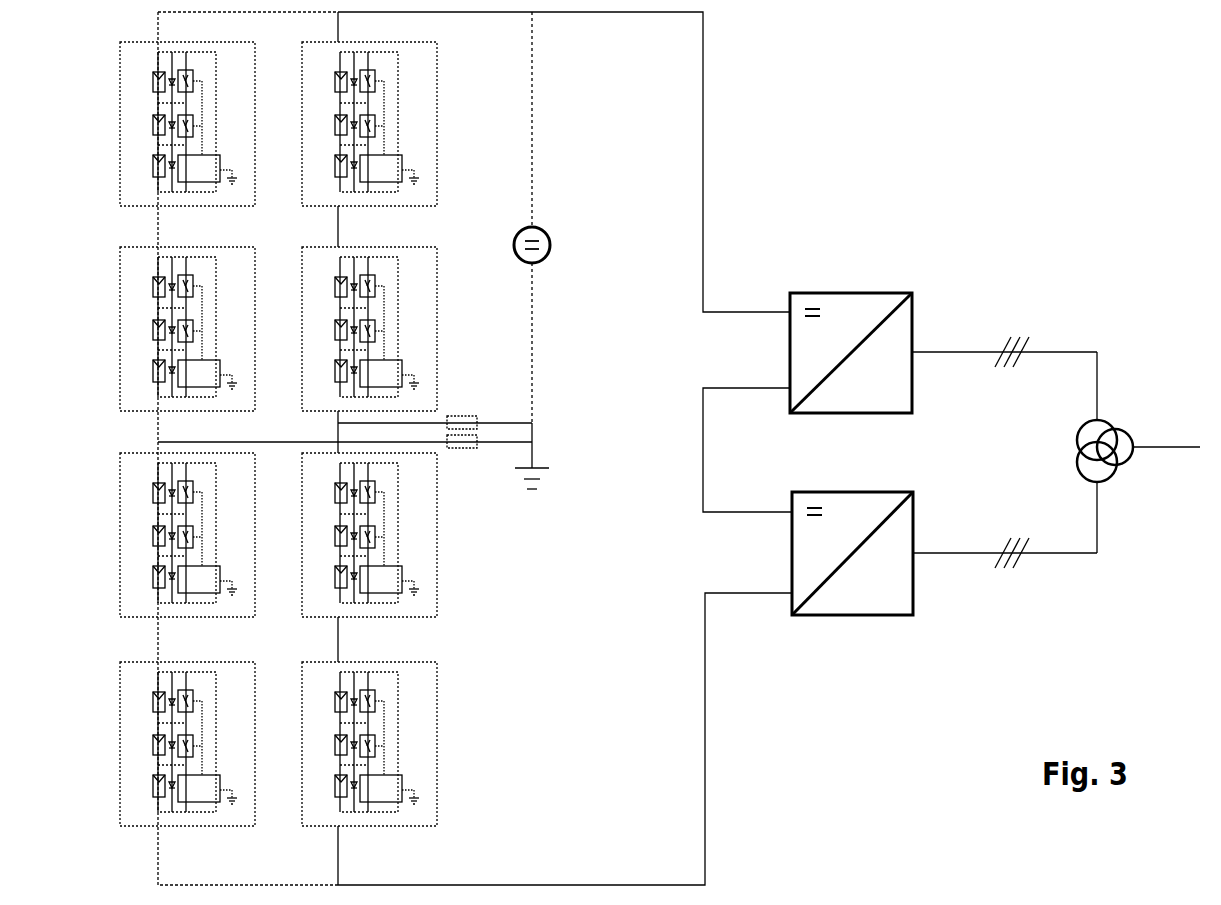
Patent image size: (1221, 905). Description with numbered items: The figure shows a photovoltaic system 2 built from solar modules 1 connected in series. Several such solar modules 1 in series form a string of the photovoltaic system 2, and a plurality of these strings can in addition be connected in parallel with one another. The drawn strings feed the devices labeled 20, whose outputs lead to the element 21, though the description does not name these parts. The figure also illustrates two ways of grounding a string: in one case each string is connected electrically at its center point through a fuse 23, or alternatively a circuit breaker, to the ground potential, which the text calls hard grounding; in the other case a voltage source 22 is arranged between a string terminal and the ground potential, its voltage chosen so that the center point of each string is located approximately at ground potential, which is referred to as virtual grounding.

The solar module 1 is at (437, 97).
The photovoltaic system 2 is at (784, 200).
The inverter 20 is at (900, 413).
The transformer 21 is at (1130, 460).
The voltage source 22 is at (550, 256).
The fuse 23 is at (462, 448).